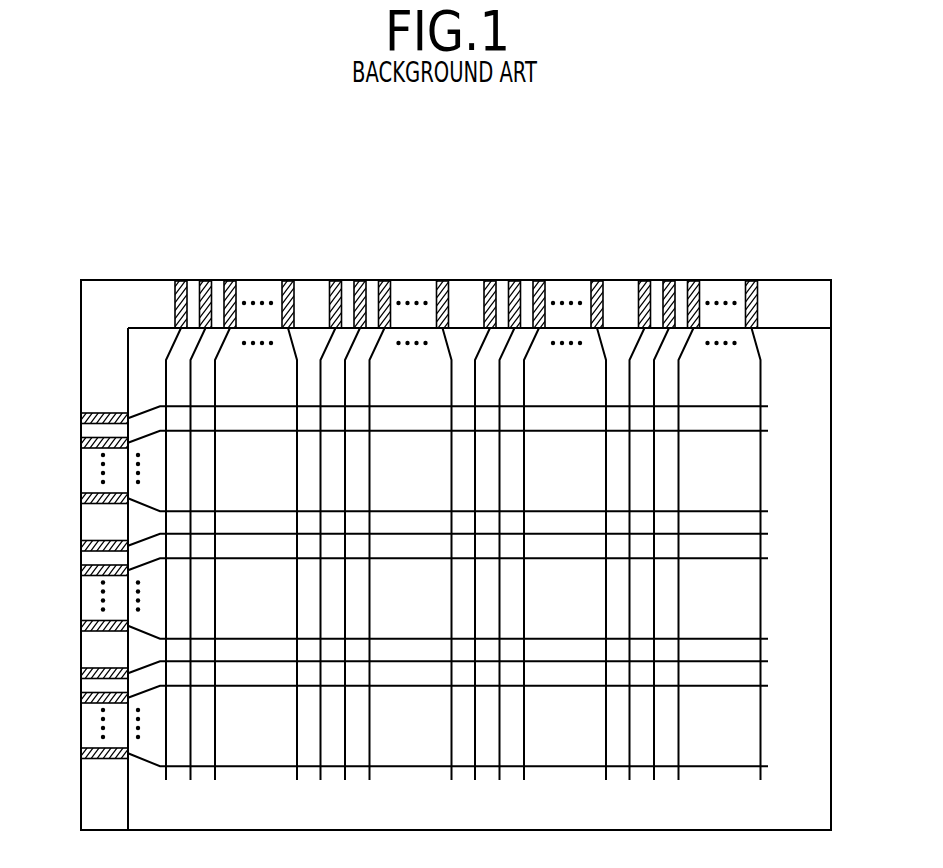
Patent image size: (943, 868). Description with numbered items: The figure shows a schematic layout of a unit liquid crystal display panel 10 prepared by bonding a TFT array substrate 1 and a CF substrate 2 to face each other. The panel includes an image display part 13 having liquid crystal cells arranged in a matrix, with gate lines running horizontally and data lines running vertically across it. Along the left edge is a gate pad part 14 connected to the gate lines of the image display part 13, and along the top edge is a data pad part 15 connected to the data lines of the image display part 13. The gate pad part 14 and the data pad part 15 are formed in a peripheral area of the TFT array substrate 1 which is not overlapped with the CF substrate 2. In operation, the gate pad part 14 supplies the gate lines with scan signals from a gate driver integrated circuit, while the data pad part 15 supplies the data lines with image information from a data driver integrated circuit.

The TFT array substrate 1 is at (818, 309).
The CF substrate 2 is at (818, 377).
The liquid crystal display panel 10 is at (113, 266).
The image display part 13 is at (398, 485).
The gate pad part 14 is at (65, 764).
The data pad part 15 is at (762, 266).